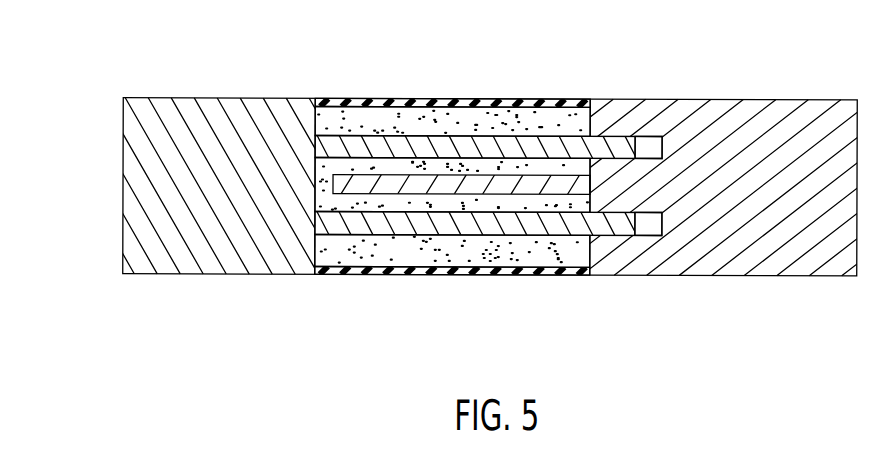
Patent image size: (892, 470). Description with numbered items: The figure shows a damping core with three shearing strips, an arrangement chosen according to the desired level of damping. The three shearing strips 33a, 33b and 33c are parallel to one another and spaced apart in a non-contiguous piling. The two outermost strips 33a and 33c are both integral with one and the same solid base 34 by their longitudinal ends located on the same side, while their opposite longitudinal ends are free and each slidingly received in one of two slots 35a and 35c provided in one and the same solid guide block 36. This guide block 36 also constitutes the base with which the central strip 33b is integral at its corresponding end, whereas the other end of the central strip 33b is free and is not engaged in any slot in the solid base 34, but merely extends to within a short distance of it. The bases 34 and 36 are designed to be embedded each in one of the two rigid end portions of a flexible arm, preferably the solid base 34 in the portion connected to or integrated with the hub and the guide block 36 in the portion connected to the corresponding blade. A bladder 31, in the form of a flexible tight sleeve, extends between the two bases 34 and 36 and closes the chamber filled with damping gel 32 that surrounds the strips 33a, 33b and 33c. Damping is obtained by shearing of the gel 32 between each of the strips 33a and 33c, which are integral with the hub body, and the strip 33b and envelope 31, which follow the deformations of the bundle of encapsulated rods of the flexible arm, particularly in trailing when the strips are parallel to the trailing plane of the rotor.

The bladder 31 is at (495, 102).
The damping gel 32 is at (387, 165).
The shearing strip 33a is at (428, 143).
The central strip 33b is at (532, 183).
The shearing strip 33c is at (433, 224).
The solid base 34 is at (240, 120).
The slot 35a is at (652, 143).
The slot 35c is at (653, 225).
The solid guide block 36 is at (768, 138).